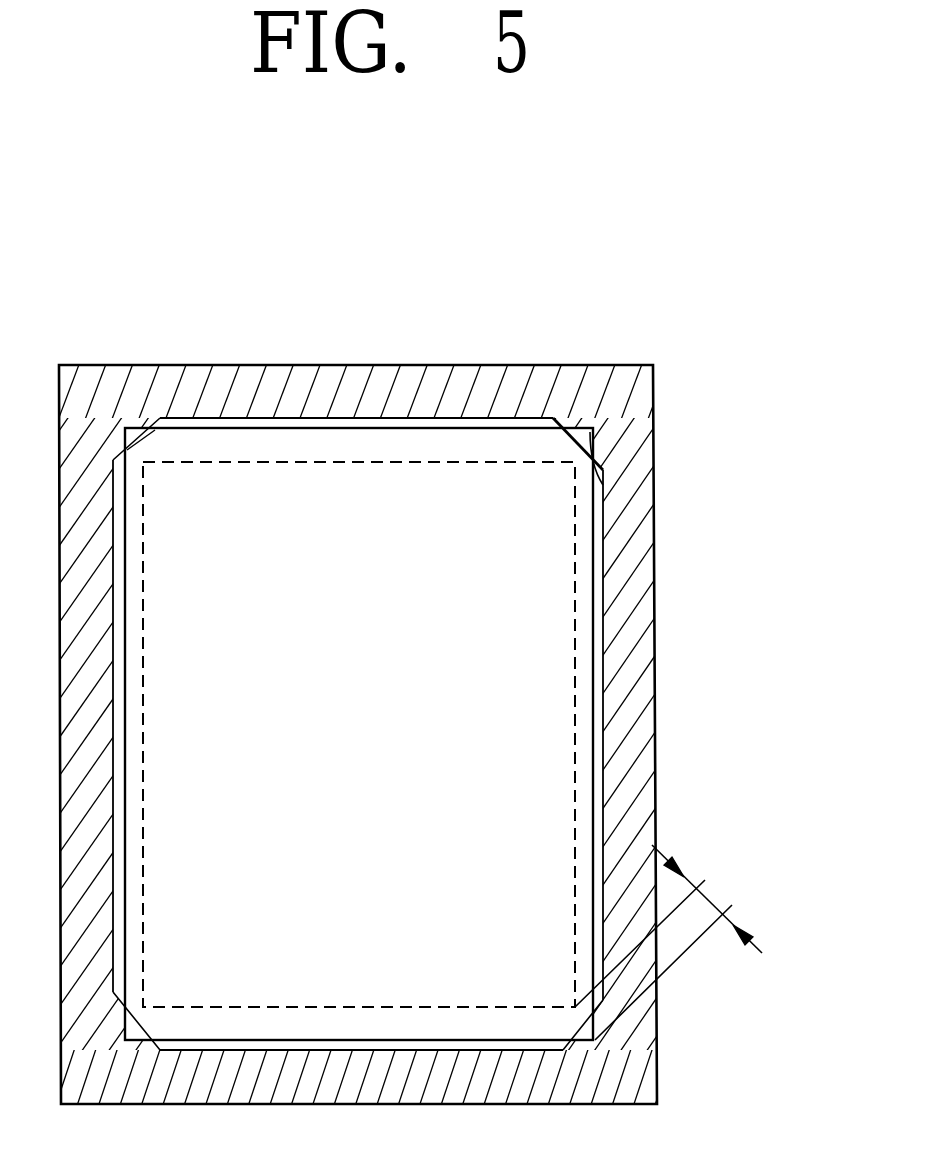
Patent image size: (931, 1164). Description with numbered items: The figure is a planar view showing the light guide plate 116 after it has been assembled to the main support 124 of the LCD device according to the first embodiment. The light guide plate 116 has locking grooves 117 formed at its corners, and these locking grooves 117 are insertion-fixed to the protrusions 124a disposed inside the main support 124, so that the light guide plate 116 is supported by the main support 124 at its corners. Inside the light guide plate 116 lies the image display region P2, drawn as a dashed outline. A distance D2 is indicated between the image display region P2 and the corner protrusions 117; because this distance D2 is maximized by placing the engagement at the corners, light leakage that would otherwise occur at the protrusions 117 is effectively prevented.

The light guide plate 116 is at (540, 787).
The locking groove 117 is at (596, 447).
The main support 124 is at (633, 702).
The protrusion 124a is at (590, 433).
The image display region P2 is at (385, 460).
The distance D2 is at (668, 942).